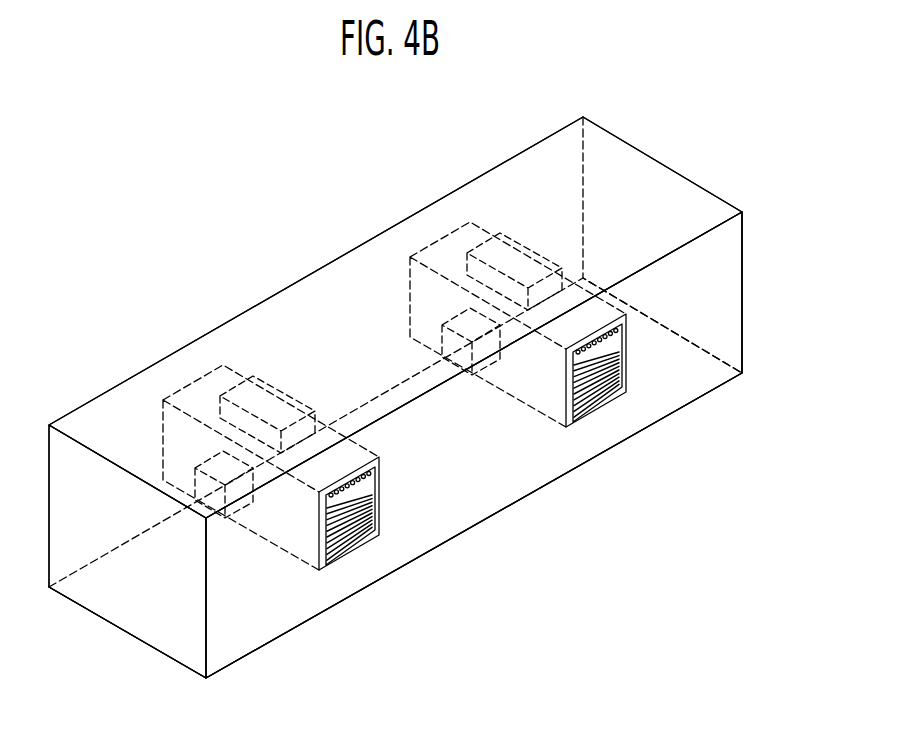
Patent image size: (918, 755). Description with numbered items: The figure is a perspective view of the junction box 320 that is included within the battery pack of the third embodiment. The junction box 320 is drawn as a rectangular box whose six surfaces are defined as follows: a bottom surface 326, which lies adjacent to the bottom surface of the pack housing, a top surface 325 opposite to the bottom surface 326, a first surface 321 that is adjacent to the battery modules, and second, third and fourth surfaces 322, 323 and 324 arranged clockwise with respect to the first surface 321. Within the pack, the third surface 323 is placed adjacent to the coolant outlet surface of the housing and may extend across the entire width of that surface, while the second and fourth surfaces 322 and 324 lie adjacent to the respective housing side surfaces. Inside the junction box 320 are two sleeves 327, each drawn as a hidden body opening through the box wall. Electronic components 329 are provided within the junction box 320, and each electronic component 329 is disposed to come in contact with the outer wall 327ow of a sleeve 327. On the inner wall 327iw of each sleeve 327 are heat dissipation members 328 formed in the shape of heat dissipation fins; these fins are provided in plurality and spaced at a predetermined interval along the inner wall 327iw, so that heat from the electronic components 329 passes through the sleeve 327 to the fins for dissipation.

The junction box 320 is at (708, 102).
The first surface 321 is at (312, 290).
The second surface 322 is at (703, 212).
The third surface 323 is at (265, 628).
The fourth surface 324 is at (172, 640).
The top surface 325 is at (528, 178).
The bottom surface 326 is at (125, 612).
The sleeve 327 is at (586, 582).
The outer wall of sleeve 327ow is at (380, 482).
The inner wall of sleeve 327iw is at (380, 535).
The heat dissipation member 328 is at (355, 547).
The electronic component 329 is at (333, 448).